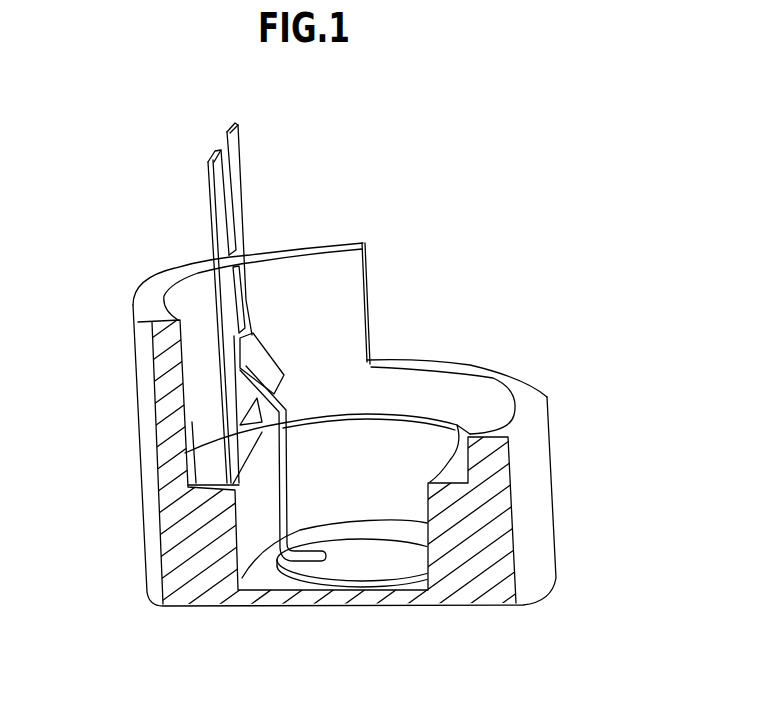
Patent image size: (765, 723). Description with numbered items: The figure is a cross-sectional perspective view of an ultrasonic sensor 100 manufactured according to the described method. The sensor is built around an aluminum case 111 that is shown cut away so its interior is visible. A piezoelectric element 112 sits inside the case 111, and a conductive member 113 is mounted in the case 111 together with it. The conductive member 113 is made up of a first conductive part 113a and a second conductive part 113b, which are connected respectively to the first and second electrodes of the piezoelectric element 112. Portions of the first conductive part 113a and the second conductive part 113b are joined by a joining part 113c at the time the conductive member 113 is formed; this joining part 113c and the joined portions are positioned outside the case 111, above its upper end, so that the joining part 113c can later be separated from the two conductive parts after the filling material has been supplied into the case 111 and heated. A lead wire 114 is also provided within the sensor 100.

The ultrasonic sensor 100 is at (45, 111).
The case 111 is at (545, 495).
The piezoelectric element 112 is at (388, 583).
The conductive member 113 is at (197, 175).
The first conductive part 113a is at (238, 133).
The second conductive part 113b is at (210, 200).
The joining part 113c is at (250, 244).
The lead wire 114 is at (279, 495).